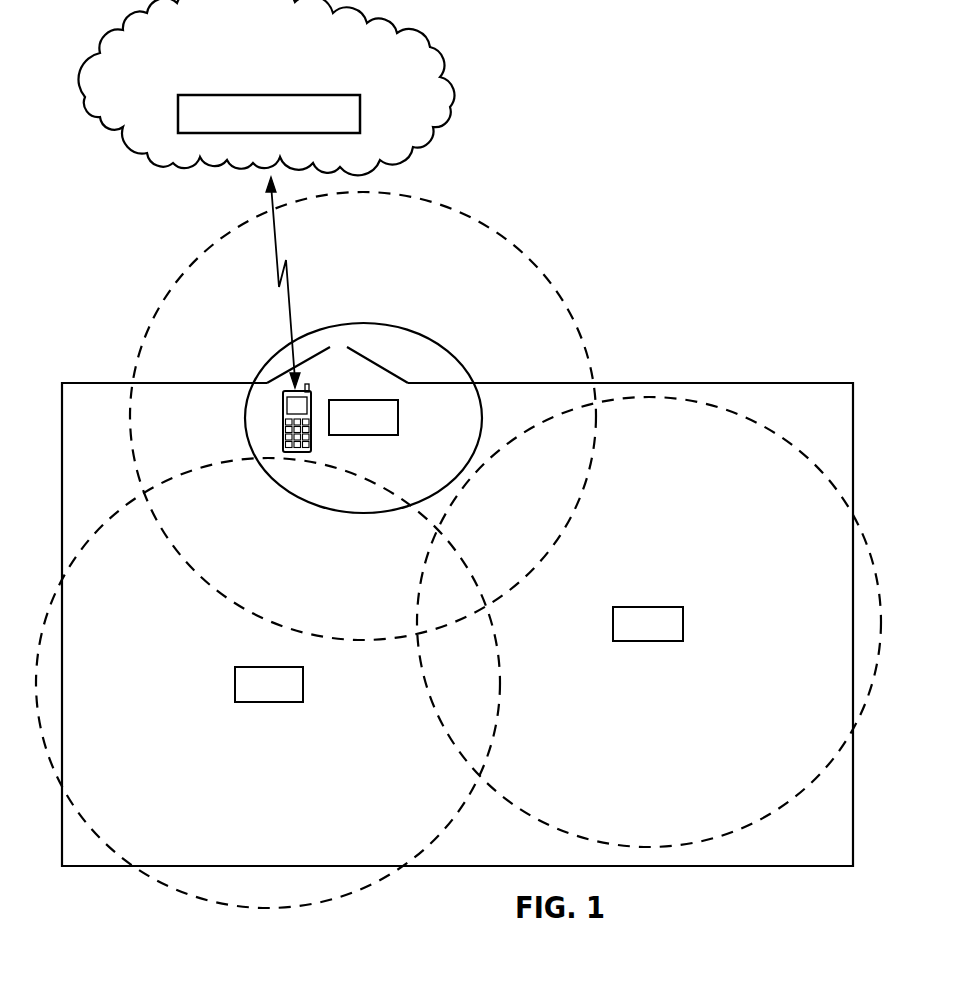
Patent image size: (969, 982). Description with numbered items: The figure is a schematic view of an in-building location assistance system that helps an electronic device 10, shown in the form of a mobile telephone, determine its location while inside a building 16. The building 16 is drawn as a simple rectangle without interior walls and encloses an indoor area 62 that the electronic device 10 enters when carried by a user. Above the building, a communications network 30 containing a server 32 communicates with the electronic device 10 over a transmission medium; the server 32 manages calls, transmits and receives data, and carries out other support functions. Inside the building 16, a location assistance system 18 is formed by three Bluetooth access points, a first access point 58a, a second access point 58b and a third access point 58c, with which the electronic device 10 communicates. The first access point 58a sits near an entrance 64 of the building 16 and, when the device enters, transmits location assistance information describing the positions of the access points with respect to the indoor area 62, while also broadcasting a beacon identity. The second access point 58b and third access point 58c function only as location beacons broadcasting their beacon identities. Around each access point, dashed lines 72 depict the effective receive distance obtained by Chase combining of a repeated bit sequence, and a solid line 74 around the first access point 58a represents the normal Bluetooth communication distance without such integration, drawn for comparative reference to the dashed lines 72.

The electronic device 10 is at (281, 414).
The building 16 is at (657, 866).
The location assistance system 18 is at (755, 400).
The communications network 30 is at (390, 56).
The server 32 is at (312, 125).
The first access point 58a is at (380, 435).
The second access point 58b is at (630, 641).
The third access point 58c is at (251, 702).
The indoor area 62 is at (497, 833).
The entrance 64 is at (363, 358).
The dashed lines 72 is at (545, 290).
The solid line 74 is at (417, 333).